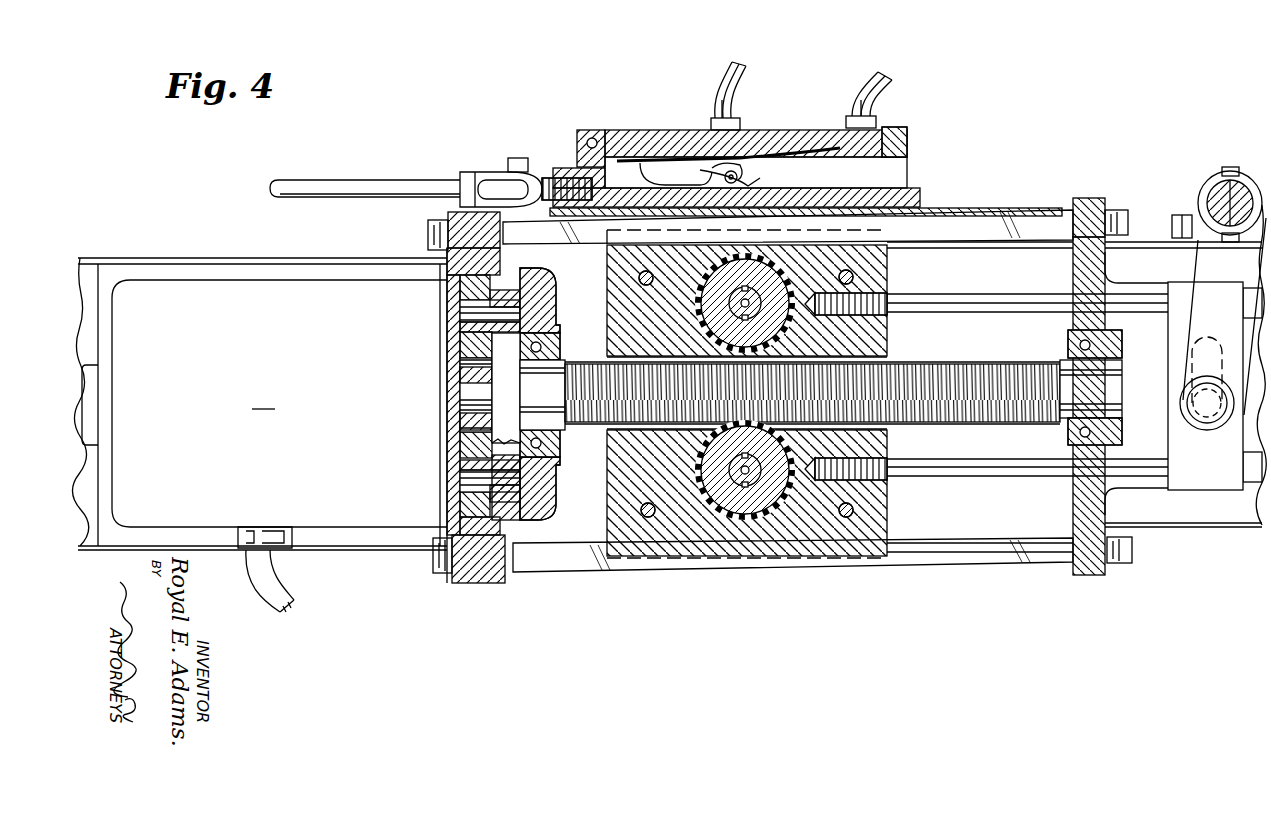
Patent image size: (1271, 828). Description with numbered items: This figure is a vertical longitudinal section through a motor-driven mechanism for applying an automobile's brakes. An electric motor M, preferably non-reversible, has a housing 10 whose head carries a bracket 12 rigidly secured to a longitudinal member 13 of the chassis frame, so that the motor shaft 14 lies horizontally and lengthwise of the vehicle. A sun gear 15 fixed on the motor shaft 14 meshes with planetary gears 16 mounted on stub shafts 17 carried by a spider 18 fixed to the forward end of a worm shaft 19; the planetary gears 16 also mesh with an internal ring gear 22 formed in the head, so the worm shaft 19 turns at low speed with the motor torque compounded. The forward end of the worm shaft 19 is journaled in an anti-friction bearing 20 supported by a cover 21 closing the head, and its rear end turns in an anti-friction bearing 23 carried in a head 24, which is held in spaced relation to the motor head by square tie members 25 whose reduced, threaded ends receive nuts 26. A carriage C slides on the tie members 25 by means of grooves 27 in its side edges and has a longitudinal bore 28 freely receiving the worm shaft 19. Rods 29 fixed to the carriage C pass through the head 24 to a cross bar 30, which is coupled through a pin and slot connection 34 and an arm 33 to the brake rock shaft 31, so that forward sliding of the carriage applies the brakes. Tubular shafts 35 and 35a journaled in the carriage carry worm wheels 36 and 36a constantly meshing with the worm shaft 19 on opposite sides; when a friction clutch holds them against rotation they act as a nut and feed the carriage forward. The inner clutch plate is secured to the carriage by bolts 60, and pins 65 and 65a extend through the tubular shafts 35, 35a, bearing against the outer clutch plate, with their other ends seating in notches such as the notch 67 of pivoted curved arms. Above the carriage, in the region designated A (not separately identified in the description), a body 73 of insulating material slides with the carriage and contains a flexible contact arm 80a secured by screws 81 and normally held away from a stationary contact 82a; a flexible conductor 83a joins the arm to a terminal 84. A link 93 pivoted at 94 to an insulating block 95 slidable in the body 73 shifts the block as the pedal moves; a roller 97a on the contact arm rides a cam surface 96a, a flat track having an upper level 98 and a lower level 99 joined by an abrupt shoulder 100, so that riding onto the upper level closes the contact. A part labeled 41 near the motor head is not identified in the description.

The housing 10 is at (279, 375).
The bracket 12 is at (272, 270).
The longitudinal member 13 is at (231, 258).
The motor shaft 14 is at (470, 403).
The sun gear 15 is at (470, 425).
The planetary gears 16 is at (470, 342).
The stub shafts 17 is at (460, 316).
The spider 18 is at (507, 383).
The worm shaft 19 is at (958, 415).
The anti-friction bearing 20 is at (545, 345).
The cover 21 is at (535, 520).
The internal ring gear 22 is at (447, 272).
The anti-friction bearing 23 is at (1068, 430).
The head 24 is at (1090, 575).
The tie members 25 is at (982, 220).
The nuts 26 is at (428, 233).
The grooves 27 is at (842, 562).
The longitudinal bore 28 is at (630, 430).
The rods 29 is at (1010, 300).
The cross bar 30 is at (1180, 371).
The rock shaft 31 is at (1213, 195).
The arm 33 is at (1195, 264).
The pin and slot connection 34 is at (1205, 405).
The tubular shaft 35 is at (772, 500).
The tubular shaft 35a is at (852, 300).
The worm wheel 36 is at (728, 522).
The worm wheel 36a is at (700, 300).
The spacer block 41 is at (476, 583).
The bolts 60 is at (639, 278).
The pin 65 is at (762, 466).
The pin 65a is at (760, 313).
The notch 67 is at (887, 95).
The body 73 is at (622, 132).
The flexible contact arm 80a is at (902, 140).
The screws 81 is at (604, 162).
The stationary contact 82a is at (838, 135).
The flexible conductor 83a is at (772, 157).
The terminal 84 is at (748, 140).
The link 93 is at (496, 178).
The pivotal connection 94 is at (521, 158).
The block 95 is at (917, 192).
The cam surface 96a is at (907, 185).
The roller 97a is at (758, 152).
The upper level 98 is at (660, 165).
The lower level 99 is at (780, 160).
The shoulder 100 is at (718, 168).
The switch assembly A is at (659, 125).
The carriage C is at (650, 530).
The electric motor M is at (266, 395).